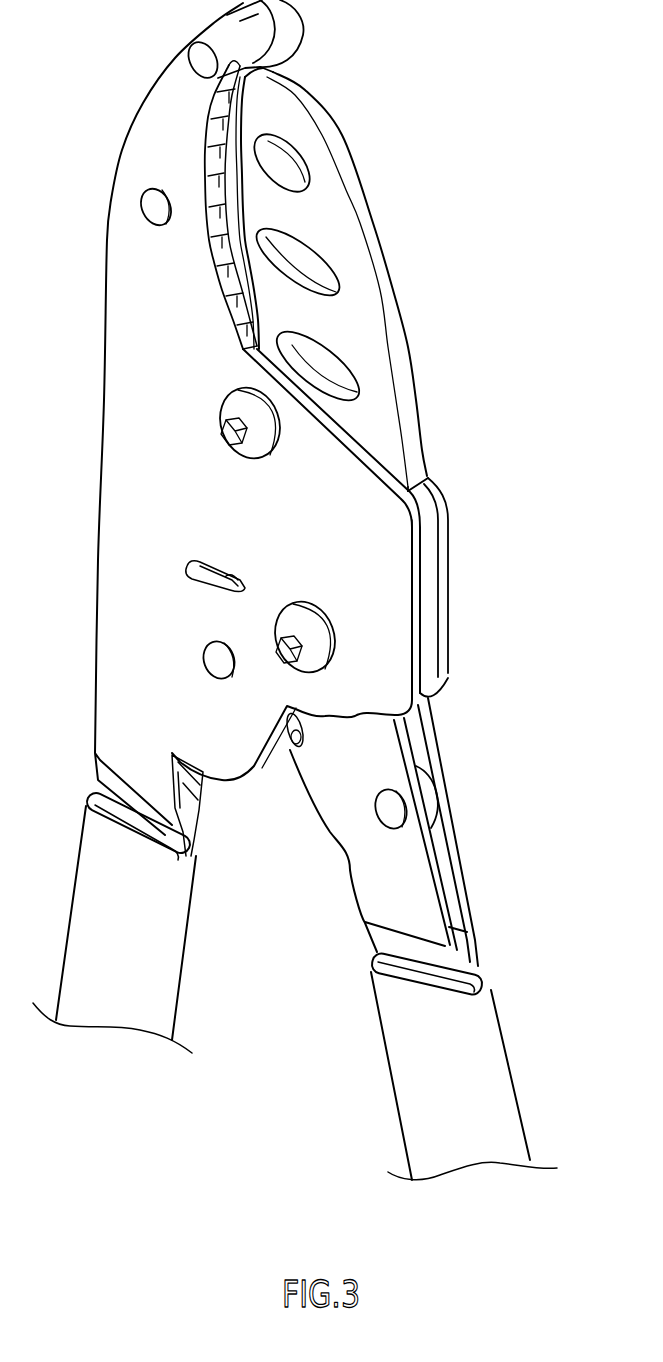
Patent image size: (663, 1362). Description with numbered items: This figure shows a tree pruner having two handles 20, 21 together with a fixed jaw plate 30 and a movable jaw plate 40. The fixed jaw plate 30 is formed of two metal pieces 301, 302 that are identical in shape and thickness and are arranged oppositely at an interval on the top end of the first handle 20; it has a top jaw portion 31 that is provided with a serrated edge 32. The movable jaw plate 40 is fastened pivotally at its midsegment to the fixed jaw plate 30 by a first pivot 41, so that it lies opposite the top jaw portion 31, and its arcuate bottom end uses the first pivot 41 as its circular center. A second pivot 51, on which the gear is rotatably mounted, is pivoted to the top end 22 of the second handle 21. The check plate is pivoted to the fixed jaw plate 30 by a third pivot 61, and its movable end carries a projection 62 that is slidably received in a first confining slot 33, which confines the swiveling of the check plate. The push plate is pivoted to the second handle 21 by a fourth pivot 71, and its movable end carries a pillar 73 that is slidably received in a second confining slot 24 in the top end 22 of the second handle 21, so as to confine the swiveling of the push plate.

The first handle 20 is at (163, 977).
The second handle 21 is at (483, 1060).
The top end of the second handle 22 is at (445, 862).
The second confining slot 24 is at (297, 747).
The fixed jaw plate 30 is at (549, 507).
The metal piece 301 is at (420, 557).
The metal piece 302 is at (445, 513).
The top jaw portion 31 is at (171, 160).
The serrated edge 32 is at (207, 131).
The first confining slot 33 is at (205, 557).
The movable jaw plate 40 is at (373, 310).
The first pivot 41 is at (221, 408).
The second pivot 51 is at (323, 645).
The third pivot 61 is at (205, 663).
The projection 62 is at (230, 582).
The fourth pivot 71 is at (389, 825).
The pillar 73 is at (287, 740).